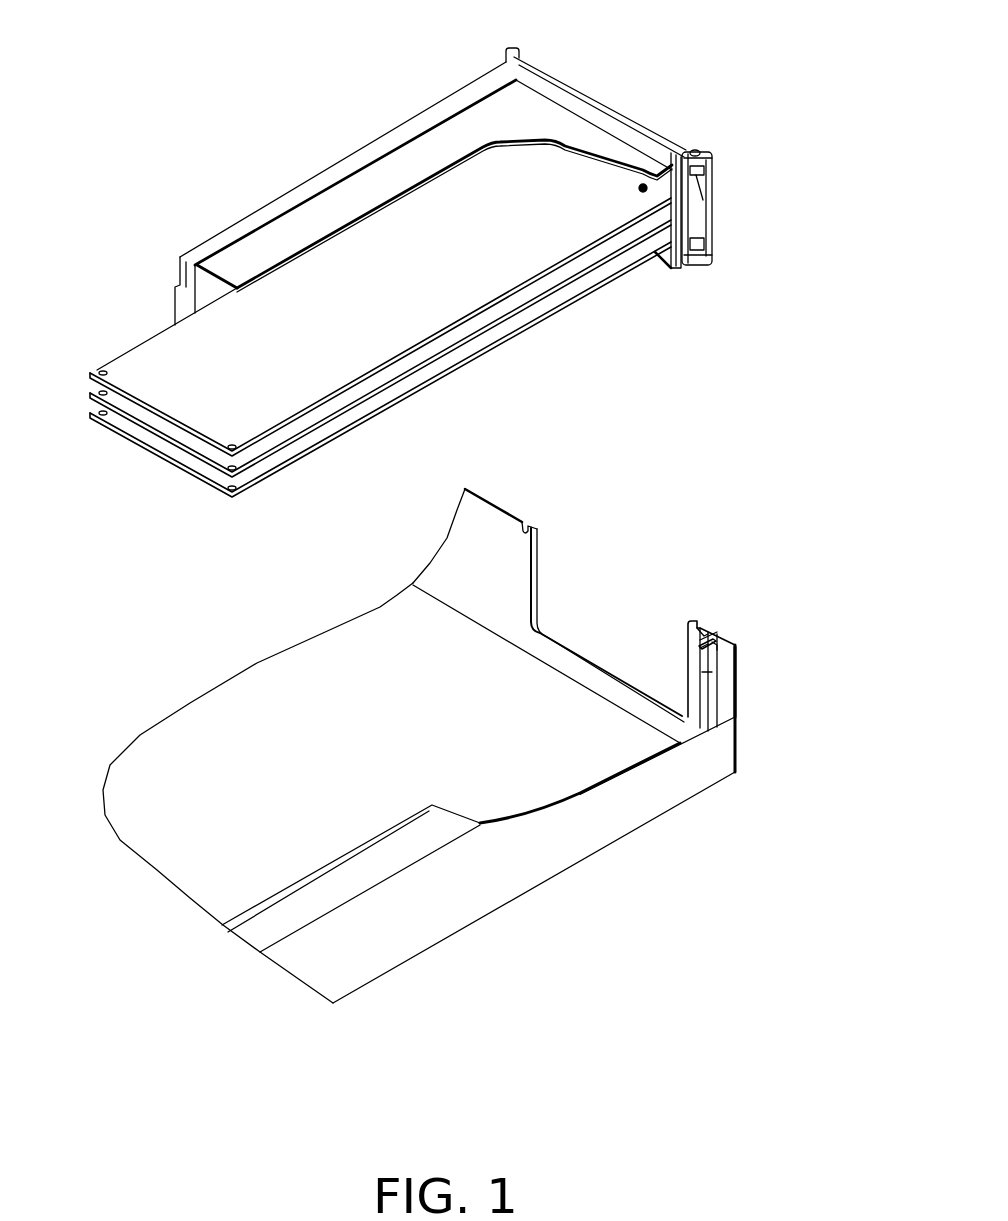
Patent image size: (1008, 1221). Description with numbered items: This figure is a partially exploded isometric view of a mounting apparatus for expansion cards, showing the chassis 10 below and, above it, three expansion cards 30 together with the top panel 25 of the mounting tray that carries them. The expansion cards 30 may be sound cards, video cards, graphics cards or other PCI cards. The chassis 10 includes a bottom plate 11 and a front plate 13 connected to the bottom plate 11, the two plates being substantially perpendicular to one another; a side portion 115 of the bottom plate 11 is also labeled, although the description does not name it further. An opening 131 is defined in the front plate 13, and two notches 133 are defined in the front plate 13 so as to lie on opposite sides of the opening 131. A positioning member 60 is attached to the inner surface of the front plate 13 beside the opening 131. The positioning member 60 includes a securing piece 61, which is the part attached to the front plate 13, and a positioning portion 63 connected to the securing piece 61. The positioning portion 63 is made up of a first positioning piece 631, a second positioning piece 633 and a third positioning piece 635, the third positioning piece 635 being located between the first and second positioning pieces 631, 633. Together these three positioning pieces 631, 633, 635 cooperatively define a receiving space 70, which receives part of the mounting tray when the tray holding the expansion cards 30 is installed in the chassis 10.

The chassis 10 is at (510, 498).
The bottom plate 11 is at (563, 775).
The side flange 115 is at (683, 783).
The front plate 13 is at (536, 614).
The opening 131 is at (580, 593).
The notch 133 is at (527, 525).
The top panel 25 is at (273, 242).
The expansion card 30 is at (158, 358).
The positioning member 60 is at (770, 657).
The securing piece 61 is at (723, 698).
The positioning portion 63 is at (774, 657).
The first positioning piece 631 is at (708, 678).
The second positioning piece 633 is at (702, 633).
The third positioning piece 635 is at (717, 645).
The receiving space 70 is at (700, 658).